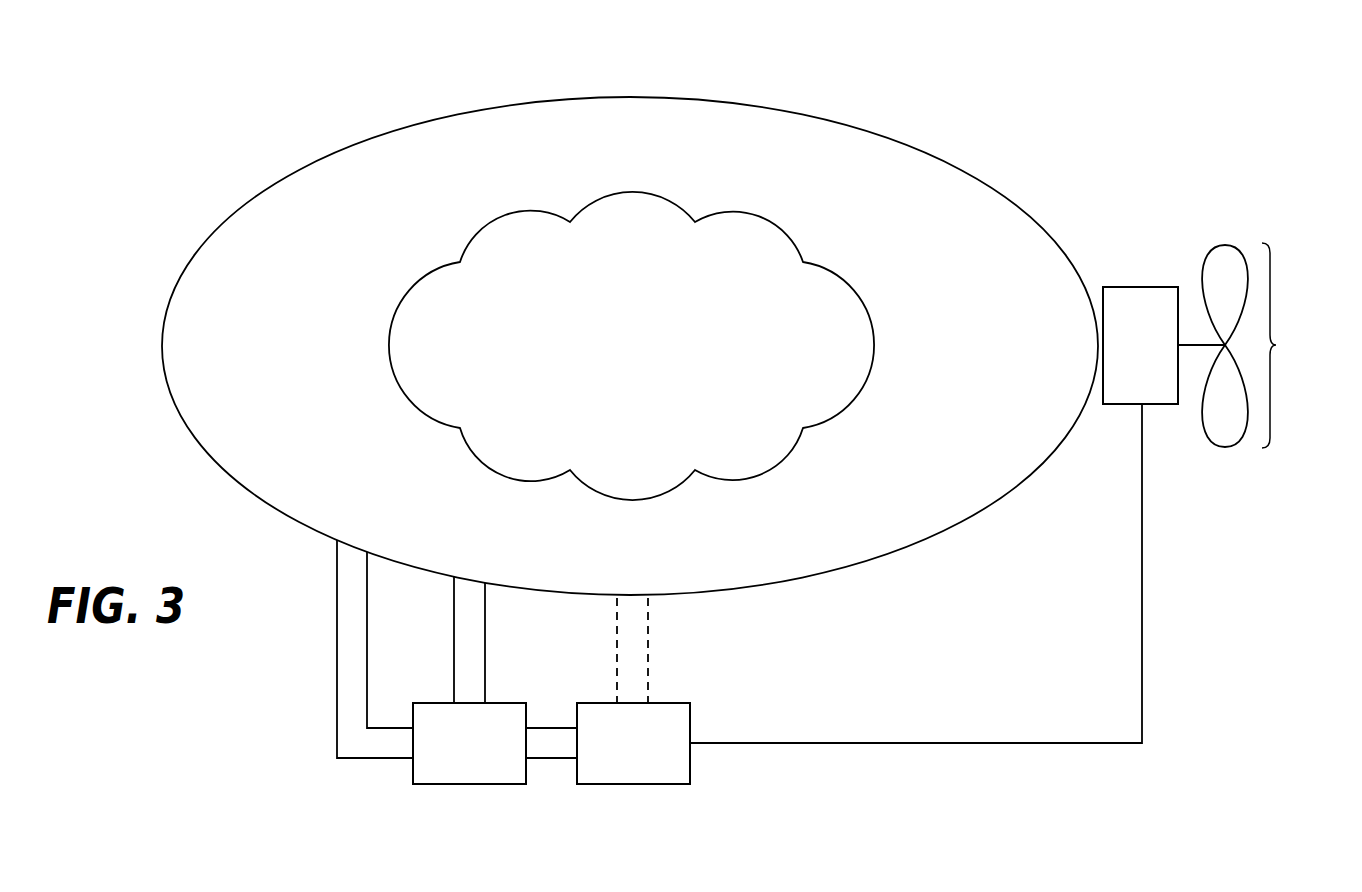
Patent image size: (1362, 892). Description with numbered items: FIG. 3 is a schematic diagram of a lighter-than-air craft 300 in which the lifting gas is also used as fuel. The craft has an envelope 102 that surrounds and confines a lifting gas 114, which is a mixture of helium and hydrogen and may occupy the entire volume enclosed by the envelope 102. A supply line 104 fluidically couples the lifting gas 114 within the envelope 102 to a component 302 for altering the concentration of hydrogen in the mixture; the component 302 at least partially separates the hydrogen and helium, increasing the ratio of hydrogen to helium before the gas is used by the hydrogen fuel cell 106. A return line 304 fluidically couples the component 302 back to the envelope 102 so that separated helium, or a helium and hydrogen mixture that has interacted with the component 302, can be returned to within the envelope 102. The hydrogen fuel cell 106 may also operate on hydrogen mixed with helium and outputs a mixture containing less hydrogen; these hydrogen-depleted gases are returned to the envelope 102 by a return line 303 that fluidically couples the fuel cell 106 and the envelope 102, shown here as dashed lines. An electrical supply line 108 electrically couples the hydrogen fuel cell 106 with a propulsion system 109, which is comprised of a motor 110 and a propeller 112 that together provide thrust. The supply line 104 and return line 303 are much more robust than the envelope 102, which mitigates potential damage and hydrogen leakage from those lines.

The LTA craft 300 is at (1111, 82).
The envelope 102 is at (345, 148).
The lifting gas 114 is at (631, 346).
The motor 110 is at (1143, 287).
The propulsion system 109 is at (1292, 345).
The propeller 112 is at (1225, 447).
The electrical supply line 108 is at (945, 743).
The supply line 104 is at (337, 663).
The return line 304 is at (485, 643).
The return line 303 is at (648, 643).
The component for altering the concentration of hydrogen 302 is at (468, 784).
The hydrogen fuel cell 106 is at (640, 784).